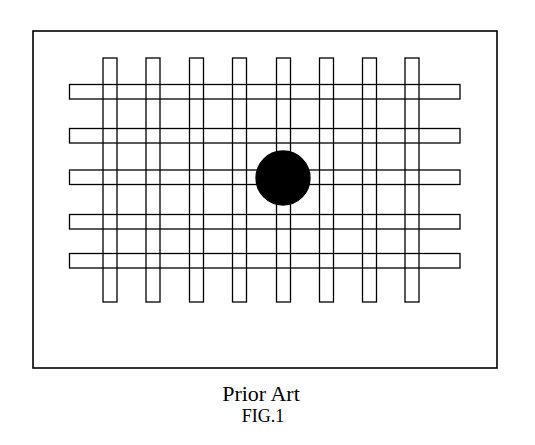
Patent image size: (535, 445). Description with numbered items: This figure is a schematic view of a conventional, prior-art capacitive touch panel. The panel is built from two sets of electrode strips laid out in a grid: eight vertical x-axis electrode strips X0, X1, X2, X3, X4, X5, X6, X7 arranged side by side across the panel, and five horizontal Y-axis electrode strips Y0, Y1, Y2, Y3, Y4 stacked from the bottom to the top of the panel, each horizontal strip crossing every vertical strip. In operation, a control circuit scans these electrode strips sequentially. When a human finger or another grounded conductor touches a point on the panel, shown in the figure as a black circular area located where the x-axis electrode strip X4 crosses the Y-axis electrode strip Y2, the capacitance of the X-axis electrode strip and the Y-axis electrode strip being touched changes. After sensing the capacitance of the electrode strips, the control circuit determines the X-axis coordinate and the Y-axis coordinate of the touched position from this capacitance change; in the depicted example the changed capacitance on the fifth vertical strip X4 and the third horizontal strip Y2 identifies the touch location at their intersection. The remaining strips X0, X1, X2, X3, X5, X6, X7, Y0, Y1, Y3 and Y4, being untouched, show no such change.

The x-axis electrode strip X0 is at (107, 195).
The x-axis electrode strip X1 is at (150, 195).
The x-axis electrode strip X2 is at (193, 195).
The x-axis electrode strip X3 is at (237, 195).
The x-axis electrode strip X4 is at (281, 195).
The x-axis electrode strip X5 is at (323, 195).
The x-axis electrode strip X6 is at (366, 195).
The x-axis electrode strip X7 is at (410, 195).
The Y-axis electrode strip Y0 is at (252, 261).
The Y-axis electrode strip Y1 is at (252, 222).
The Y-axis electrode strip Y2 is at (252, 177).
The Y-axis electrode strip Y3 is at (252, 136).
The Y-axis electrode strip Y4 is at (252, 92).